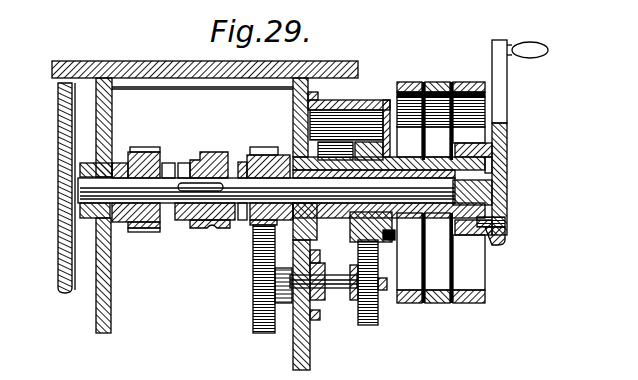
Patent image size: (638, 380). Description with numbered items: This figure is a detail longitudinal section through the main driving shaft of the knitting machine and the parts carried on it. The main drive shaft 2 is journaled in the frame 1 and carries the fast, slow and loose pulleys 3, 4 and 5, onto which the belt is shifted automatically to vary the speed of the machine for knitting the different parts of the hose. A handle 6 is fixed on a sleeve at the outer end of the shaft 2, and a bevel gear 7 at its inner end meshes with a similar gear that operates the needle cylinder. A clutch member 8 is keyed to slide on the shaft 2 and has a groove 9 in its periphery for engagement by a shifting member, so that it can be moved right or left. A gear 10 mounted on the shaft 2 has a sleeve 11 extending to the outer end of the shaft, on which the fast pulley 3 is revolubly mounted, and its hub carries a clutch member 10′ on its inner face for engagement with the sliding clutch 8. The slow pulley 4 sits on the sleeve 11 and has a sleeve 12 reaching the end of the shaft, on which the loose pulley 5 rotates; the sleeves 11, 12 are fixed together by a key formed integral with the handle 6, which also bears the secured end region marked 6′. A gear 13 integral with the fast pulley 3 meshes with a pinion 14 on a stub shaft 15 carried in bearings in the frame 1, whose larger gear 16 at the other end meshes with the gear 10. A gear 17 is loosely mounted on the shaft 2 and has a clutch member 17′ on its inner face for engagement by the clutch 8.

The frame 1 is at (118, 304).
The main drive shaft 2 is at (260, 186).
The fast pulley 3 is at (406, 82).
The slow pulley 4 is at (437, 82).
The loose pulley 5 is at (462, 82).
The handle 6 is at (500, 109).
The end plate recess 6′ is at (493, 165).
The bevel gear 7 is at (61, 292).
The clutch member 8 is at (208, 158).
The groove 9 is at (212, 229).
The gear 10 is at (262, 162).
The clutch member 10′ is at (241, 162).
The sleeve 11 is at (414, 212).
The sleeve 12 is at (493, 239).
The gear 13 is at (366, 155).
The pinion 14 is at (370, 320).
The stub shaft 15 is at (334, 289).
The gear 16 is at (262, 290).
The gear 17 is at (143, 160).
The clutch member 17′ is at (171, 167).